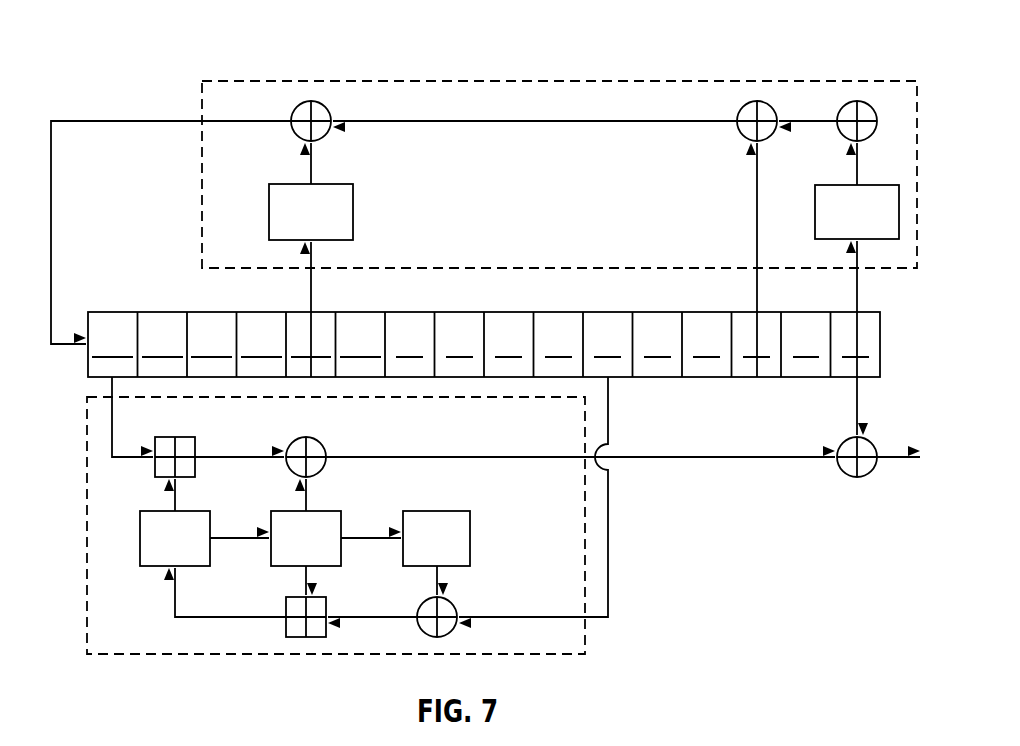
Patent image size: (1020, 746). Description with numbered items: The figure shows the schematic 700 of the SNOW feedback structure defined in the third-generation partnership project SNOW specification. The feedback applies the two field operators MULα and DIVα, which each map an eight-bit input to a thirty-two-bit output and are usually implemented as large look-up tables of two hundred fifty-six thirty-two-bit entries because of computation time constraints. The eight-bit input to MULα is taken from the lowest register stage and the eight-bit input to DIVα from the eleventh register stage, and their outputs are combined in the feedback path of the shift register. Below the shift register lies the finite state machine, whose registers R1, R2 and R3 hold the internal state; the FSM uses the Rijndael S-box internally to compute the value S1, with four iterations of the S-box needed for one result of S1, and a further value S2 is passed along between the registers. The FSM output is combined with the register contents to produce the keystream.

The schematic 700 is at (802, 42).
The FSM register R1 is at (175, 538).
The FSM register R2 is at (306, 538).
The FSM register R3 is at (436, 538).
The S1 substitution result S1 is at (239, 518).
The FSM state signal S2 is at (371, 518).